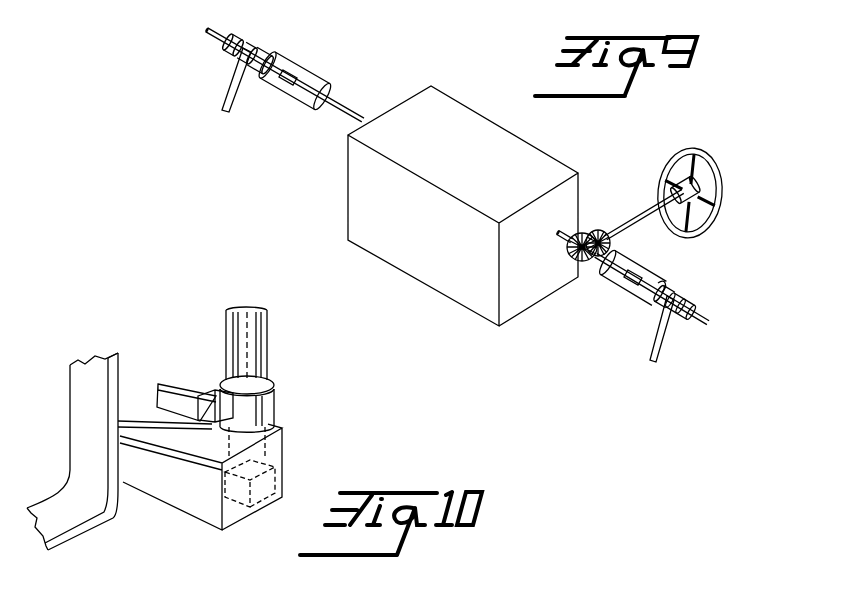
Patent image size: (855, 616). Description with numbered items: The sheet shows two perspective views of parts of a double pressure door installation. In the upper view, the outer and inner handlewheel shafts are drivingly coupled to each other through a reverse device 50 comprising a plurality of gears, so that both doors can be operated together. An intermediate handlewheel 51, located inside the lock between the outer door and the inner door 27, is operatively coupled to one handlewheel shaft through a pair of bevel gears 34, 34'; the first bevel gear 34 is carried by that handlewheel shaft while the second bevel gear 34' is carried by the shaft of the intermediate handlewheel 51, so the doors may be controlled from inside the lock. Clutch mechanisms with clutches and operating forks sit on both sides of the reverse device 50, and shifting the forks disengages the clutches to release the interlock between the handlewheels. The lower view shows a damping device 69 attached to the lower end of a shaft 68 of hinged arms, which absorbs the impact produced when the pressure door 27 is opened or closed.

In FIG. 9, the reverse device 50 is at (395, 267).
In FIG. 9, the bevel gear 34 is at (576, 276).
In FIG. 9, the bevel gear 34' is at (608, 215).
In FIG. 9, the intermediate handlewheel 51 is at (722, 178).
In FIG. 10, the inner door 27 is at (62, 540).
In FIG. 10, the shaft of hinged arms 68 is at (268, 340).
In FIG. 10, the damping device 69 is at (243, 508).